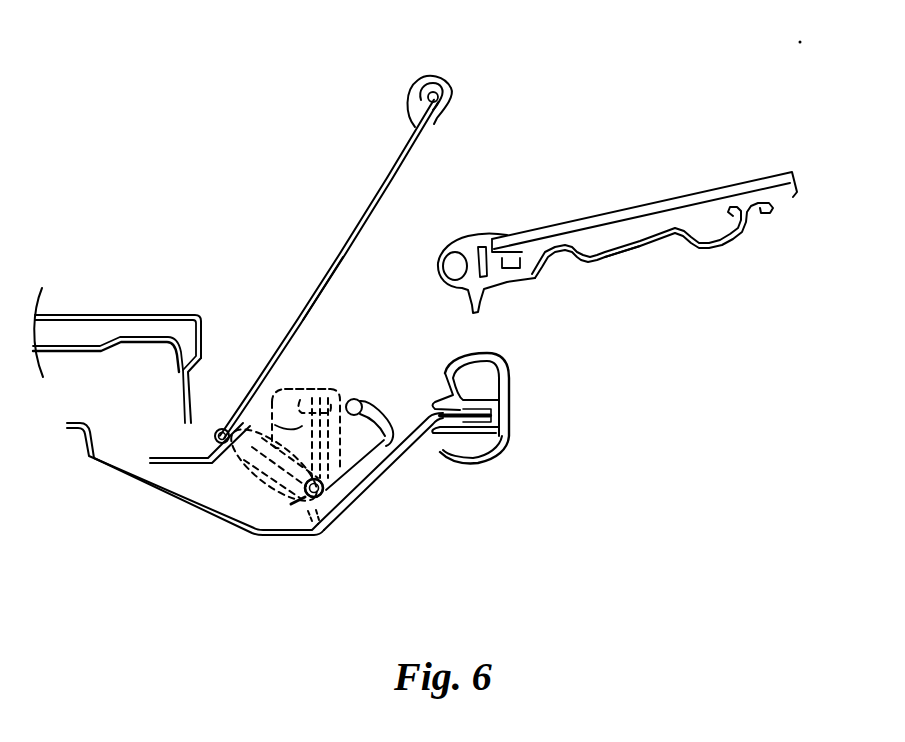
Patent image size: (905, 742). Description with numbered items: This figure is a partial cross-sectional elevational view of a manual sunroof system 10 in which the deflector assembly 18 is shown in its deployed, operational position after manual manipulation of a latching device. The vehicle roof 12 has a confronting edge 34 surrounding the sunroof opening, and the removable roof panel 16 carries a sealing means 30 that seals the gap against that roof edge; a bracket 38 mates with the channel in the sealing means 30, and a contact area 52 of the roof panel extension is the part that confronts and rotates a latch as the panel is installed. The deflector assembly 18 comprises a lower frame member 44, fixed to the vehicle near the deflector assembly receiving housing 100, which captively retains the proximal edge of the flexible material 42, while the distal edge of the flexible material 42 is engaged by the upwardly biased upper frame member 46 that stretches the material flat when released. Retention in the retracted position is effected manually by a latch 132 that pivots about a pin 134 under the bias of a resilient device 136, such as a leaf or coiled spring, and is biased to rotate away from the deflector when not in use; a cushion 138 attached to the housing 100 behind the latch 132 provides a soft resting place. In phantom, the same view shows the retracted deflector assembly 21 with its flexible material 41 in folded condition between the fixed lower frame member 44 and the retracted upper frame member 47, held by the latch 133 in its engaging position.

The sunroof system 10 is at (181, 87).
The vehicle roof 12 is at (136, 315).
The roof panel 16 is at (620, 210).
The deflector assembly 18 is at (369, 172).
The deflector assembly 21 is at (344, 386).
The sealing means 30 is at (472, 230).
The confronting edge 34 is at (202, 337).
The bracket 38 is at (622, 258).
The flexible material 41 is at (250, 460).
The flexible material 42 is at (322, 262).
The lower frame member 44 is at (195, 458).
The upper frame member 46 is at (447, 86).
The upper frame member 47 is at (275, 425).
The contact area 52 is at (505, 400).
The deflector assembly receiving housing 100 is at (190, 507).
The latch 132 is at (372, 408).
The latch 133 is at (308, 390).
The pin 134 is at (330, 492).
The resilient device 136 is at (307, 488).
The cushion 138 is at (384, 458).